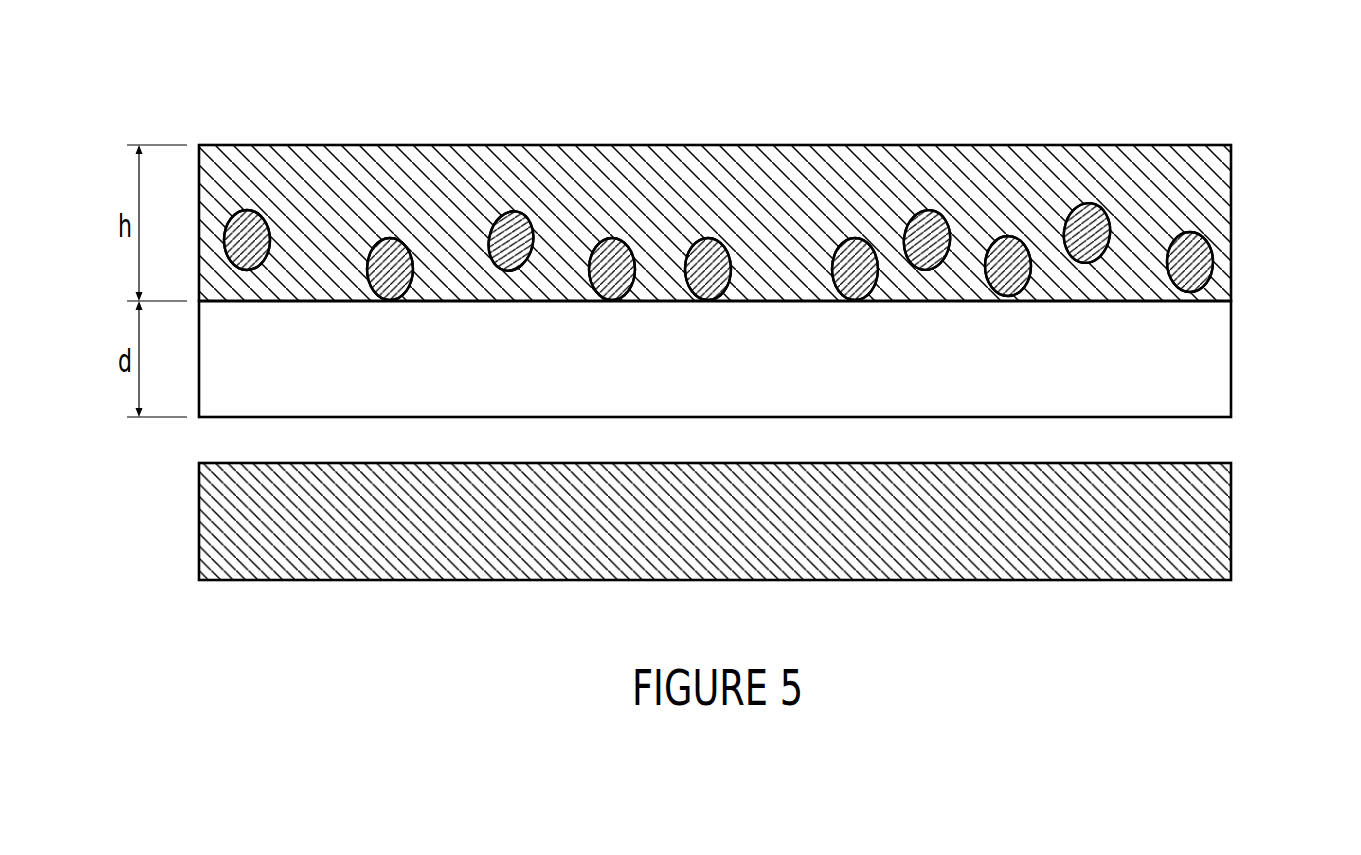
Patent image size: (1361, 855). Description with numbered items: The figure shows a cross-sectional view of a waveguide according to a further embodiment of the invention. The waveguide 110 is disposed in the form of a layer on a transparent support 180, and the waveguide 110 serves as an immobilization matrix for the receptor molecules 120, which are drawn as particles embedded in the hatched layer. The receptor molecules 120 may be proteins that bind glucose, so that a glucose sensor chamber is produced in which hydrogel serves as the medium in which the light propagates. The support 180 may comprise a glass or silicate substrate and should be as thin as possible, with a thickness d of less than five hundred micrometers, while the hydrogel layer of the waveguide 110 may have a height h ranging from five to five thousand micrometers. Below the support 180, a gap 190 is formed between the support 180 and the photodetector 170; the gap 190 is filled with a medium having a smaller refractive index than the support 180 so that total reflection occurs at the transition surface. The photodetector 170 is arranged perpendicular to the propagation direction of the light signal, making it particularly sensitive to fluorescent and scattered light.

The waveguide 110 is at (1038, 158).
The receptor molecules 120 is at (1213, 273).
The transparent support 180 is at (1218, 358).
The gap 190 is at (1218, 438).
The photodetector 170 is at (1233, 532).